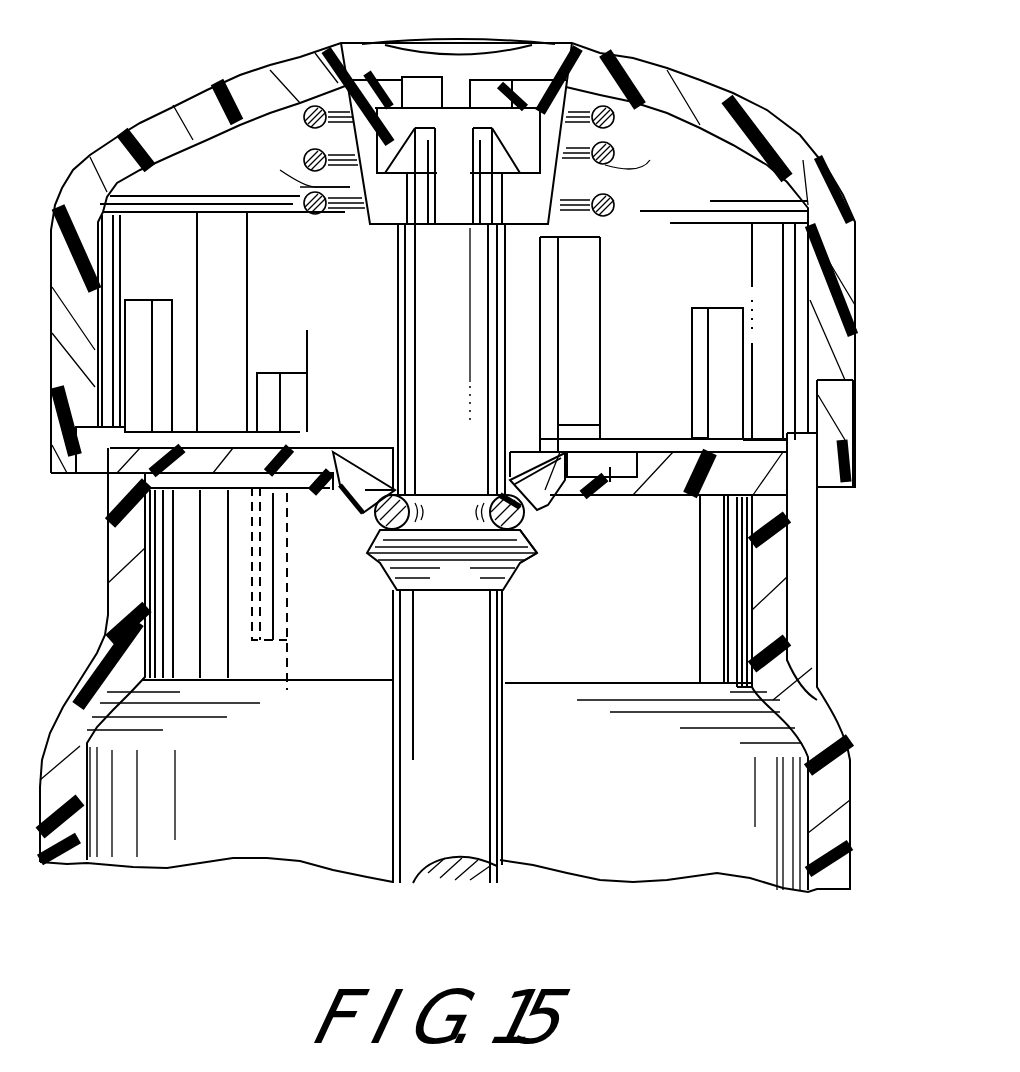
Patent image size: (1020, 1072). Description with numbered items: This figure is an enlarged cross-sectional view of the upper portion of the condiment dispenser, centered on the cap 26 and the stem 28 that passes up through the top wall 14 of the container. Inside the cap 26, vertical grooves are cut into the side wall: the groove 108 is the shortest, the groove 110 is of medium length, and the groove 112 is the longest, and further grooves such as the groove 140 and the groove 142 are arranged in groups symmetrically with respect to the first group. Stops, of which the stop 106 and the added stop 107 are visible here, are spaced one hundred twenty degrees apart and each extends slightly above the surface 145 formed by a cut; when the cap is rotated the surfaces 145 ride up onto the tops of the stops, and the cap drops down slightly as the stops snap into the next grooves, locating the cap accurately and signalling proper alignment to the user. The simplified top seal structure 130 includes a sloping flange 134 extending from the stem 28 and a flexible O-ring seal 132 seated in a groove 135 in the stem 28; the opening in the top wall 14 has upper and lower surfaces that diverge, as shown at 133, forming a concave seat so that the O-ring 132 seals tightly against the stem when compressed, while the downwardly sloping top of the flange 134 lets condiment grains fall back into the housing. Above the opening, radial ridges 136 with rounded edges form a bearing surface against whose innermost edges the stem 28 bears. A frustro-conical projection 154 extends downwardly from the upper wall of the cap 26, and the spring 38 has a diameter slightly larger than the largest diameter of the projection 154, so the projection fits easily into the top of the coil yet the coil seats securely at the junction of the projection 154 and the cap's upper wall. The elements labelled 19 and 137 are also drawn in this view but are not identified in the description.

The top wall 14 is at (763, 467).
The skirt wall 19 is at (113, 543).
The cap 26 is at (813, 100).
The stem 28 is at (503, 788).
The spring 38 is at (303, 157).
The stop 106 is at (797, 600).
The stop 107 is at (290, 432).
The groove 108 is at (822, 407).
The groove 110 is at (725, 310).
The groove 112 is at (598, 307).
The top seal structure 130 is at (540, 611).
The O-ring seal 132 is at (527, 527).
The diverging surfaces 133 is at (535, 522).
The sloping flange 134 is at (380, 568).
The groove 135 is at (463, 503).
The radial ridges 136 is at (517, 495).
The flange 137 is at (250, 497).
The groove 140 is at (280, 372).
The groove 142 is at (150, 302).
The surface 145 is at (670, 430).
The frustro-conical projection 154 is at (317, 180).